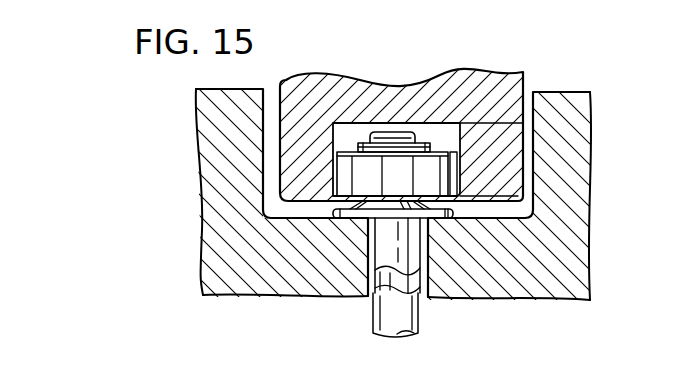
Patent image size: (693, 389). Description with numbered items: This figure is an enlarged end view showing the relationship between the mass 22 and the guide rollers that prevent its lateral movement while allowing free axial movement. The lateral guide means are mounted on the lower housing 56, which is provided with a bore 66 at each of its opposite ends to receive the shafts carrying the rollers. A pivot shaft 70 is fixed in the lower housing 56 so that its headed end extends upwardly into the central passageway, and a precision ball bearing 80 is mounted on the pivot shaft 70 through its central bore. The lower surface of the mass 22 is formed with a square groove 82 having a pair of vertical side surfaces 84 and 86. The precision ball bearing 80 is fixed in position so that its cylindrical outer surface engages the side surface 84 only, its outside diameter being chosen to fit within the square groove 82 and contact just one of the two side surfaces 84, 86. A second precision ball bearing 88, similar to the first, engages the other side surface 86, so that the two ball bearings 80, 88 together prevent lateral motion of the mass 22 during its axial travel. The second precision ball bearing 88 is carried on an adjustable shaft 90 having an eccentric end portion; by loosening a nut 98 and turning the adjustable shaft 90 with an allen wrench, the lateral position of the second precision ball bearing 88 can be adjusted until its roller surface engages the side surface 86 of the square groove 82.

The mass 22 is at (516, 92).
The lower housing 56 is at (583, 228).
The bore 66 is at (428, 296).
The pivot shaft 70 is at (419, 320).
The precision ball bearing 80 is at (463, 180).
The square groove 82 is at (428, 127).
The side surface 84 is at (341, 124).
The side surface 86 is at (485, 88).
The second precision ball bearing 88 is at (343, 177).
The adjustable shaft 90 is at (377, 253).
The nut 98 is at (263, 212).